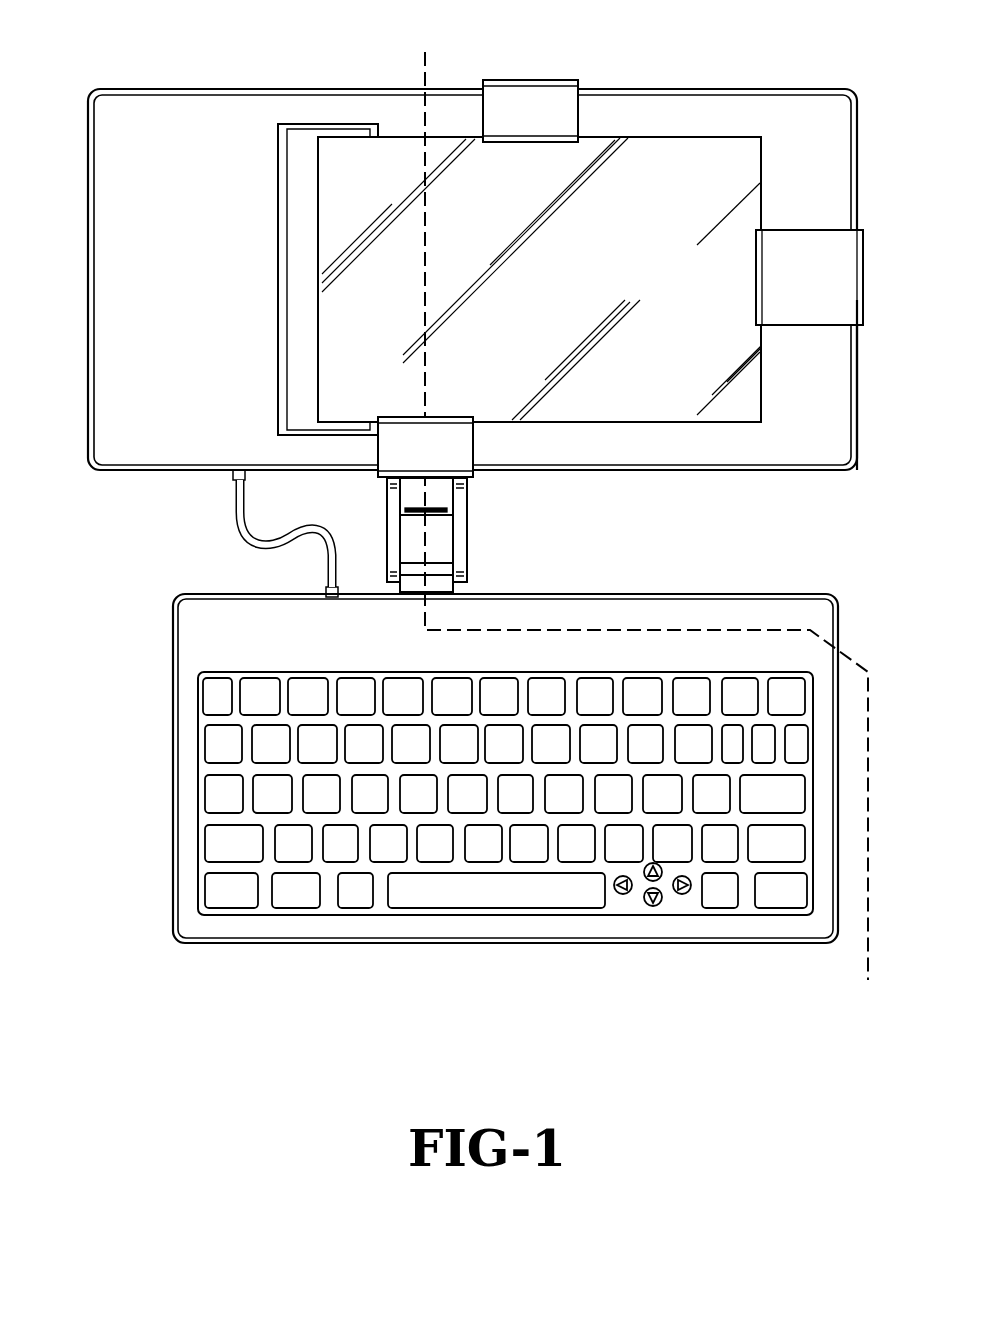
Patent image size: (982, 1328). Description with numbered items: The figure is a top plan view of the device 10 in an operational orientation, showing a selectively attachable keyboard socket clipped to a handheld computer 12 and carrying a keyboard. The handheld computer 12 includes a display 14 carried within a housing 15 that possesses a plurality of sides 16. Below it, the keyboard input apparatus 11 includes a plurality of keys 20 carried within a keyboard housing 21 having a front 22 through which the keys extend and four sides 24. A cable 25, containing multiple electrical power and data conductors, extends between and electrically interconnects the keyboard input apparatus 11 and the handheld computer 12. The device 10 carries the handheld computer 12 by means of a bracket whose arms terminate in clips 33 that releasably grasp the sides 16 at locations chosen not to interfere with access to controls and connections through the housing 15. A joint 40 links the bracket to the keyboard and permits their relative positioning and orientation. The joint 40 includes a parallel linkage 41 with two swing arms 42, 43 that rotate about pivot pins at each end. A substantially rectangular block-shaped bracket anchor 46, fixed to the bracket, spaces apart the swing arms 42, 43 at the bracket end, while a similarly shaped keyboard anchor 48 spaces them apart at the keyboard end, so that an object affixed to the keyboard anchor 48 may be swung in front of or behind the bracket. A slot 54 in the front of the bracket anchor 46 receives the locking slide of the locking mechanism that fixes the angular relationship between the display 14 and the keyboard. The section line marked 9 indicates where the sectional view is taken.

The section line 9- 9 is at (425, 52).
The device 10 is at (580, 504).
The keyboard input apparatus 11 is at (617, 586).
The handheld computer 12 is at (818, 478).
The display 14 is at (676, 178).
The housing 15 is at (188, 88).
The sides 16 is at (88, 135).
The keys 20 is at (215, 793).
The keyboard housing 21 is at (345, 950).
The front 22 is at (190, 637).
The sides 24 is at (766, 594).
The cable 25 is at (242, 528).
The clip 33 is at (530, 108).
The joint 40 is at (498, 547).
The parallel linkage 41 is at (481, 568).
The swing arm 42 is at (390, 530).
The swing arm 43 is at (460, 527).
The bracket anchor 46 is at (442, 500).
The keyboard anchor 48 is at (416, 584).
The slot 54 is at (412, 510).